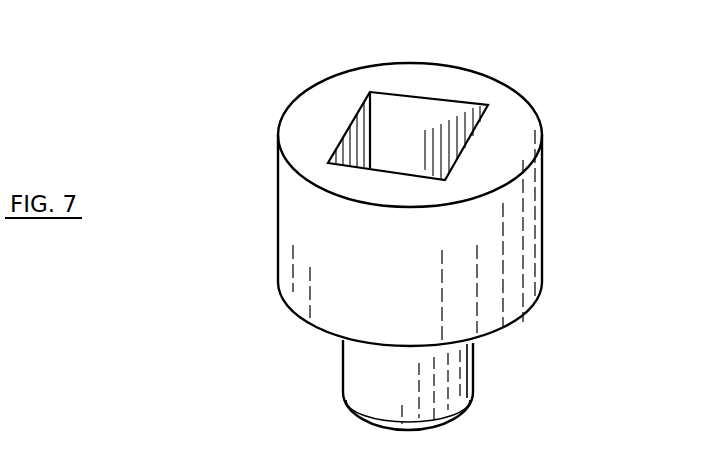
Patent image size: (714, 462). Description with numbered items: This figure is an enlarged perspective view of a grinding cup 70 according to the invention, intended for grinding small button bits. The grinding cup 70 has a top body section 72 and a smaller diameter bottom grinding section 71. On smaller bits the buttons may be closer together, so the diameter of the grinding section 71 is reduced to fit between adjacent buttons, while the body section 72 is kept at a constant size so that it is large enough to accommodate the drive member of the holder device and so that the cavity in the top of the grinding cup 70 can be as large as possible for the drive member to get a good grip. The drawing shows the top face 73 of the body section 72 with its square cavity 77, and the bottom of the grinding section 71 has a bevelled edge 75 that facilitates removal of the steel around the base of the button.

The grinding cup 70 is at (532, 82).
The grinding section 71 is at (358, 370).
The body section 72 is at (542, 203).
The top face 73 is at (497, 137).
The bevelled edge 75 is at (432, 425).
The square recess 77 is at (410, 108).